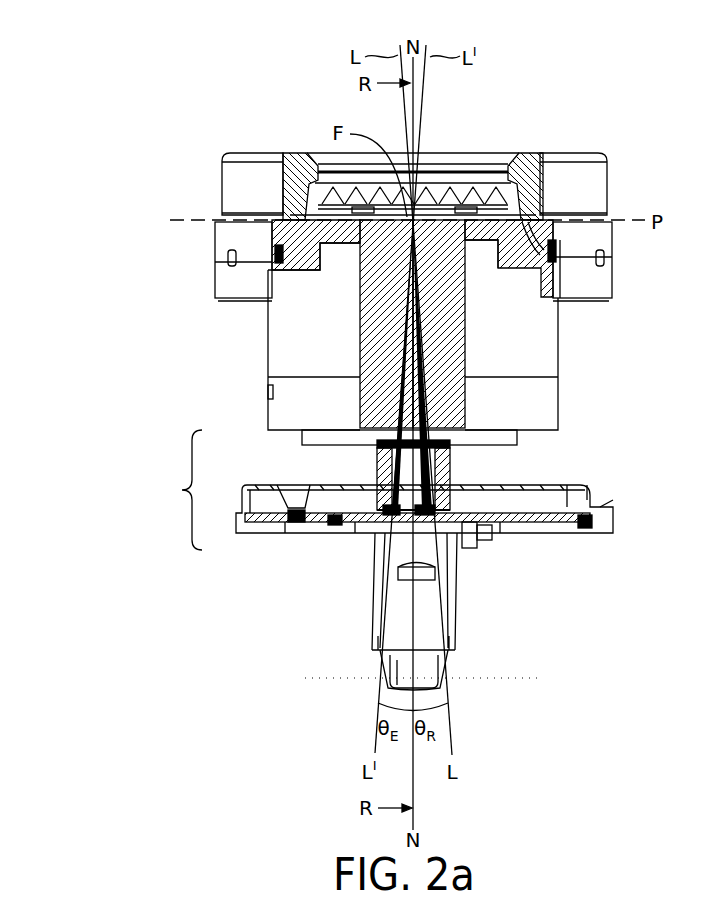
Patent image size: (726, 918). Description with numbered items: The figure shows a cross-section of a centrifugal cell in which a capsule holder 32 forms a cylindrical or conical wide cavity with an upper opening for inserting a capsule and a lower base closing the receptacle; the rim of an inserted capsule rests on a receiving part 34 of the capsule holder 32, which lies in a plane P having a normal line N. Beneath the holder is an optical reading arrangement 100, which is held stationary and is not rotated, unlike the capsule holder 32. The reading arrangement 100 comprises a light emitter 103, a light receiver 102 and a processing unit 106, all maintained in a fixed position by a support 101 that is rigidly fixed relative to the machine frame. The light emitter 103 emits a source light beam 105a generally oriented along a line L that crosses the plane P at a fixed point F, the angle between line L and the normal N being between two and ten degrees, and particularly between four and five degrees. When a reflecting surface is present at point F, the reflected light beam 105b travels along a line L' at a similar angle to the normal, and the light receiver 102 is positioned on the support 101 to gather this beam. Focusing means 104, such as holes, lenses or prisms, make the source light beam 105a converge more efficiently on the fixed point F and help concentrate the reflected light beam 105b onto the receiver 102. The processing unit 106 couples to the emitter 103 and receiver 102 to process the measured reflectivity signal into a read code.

The capsule holder 32 is at (596, 190).
The receiving part 34 is at (418, 217).
The optical reading arrangement 100 is at (167, 490).
The support 101 is at (240, 516).
The light receiver 102 is at (375, 525).
The light emitter 103 is at (447, 515).
The focusing means 104 is at (362, 417).
The source light beam 105a is at (425, 325).
The reflected light beam 105b is at (400, 320).
The processing unit 106 is at (552, 522).